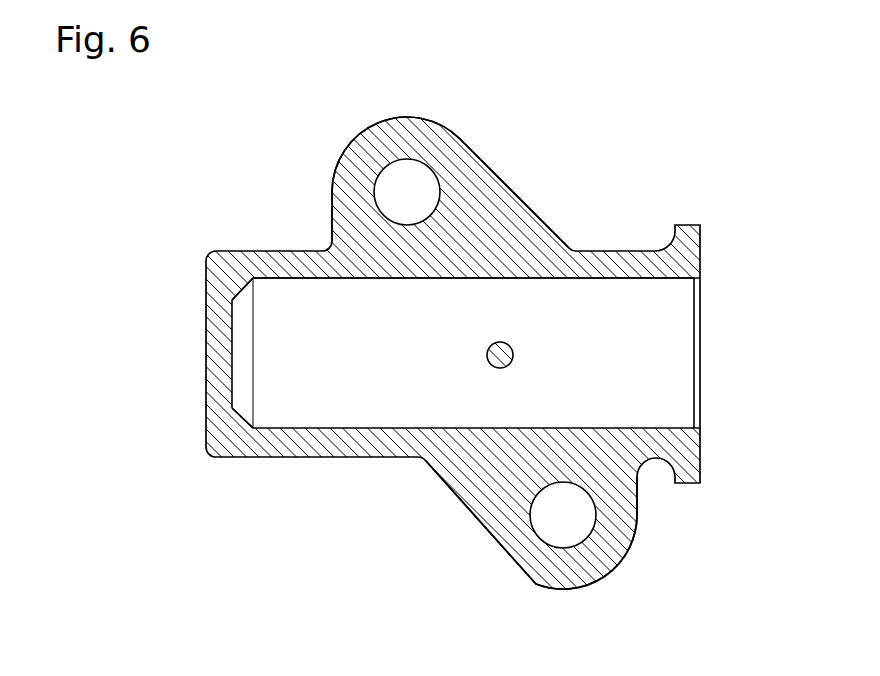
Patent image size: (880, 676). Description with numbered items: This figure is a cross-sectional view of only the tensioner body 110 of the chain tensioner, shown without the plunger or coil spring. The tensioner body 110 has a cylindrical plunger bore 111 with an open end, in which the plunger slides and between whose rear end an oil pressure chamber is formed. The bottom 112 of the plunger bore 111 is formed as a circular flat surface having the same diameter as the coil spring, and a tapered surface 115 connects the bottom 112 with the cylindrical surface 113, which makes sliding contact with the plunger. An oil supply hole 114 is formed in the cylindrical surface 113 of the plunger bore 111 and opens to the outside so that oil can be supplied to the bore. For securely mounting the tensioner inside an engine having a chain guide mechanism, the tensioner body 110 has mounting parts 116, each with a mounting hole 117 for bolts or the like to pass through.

The tensioner body 110 is at (155, 171).
The plunger bore 111 is at (618, 370).
The bottom 112 is at (236, 362).
The cylindrical surface 113 is at (553, 273).
The oil supply hole 114 is at (503, 372).
The tapered surface 115 is at (232, 300).
The mounting parts 116 is at (363, 165).
The mounting holes 117 is at (418, 185).